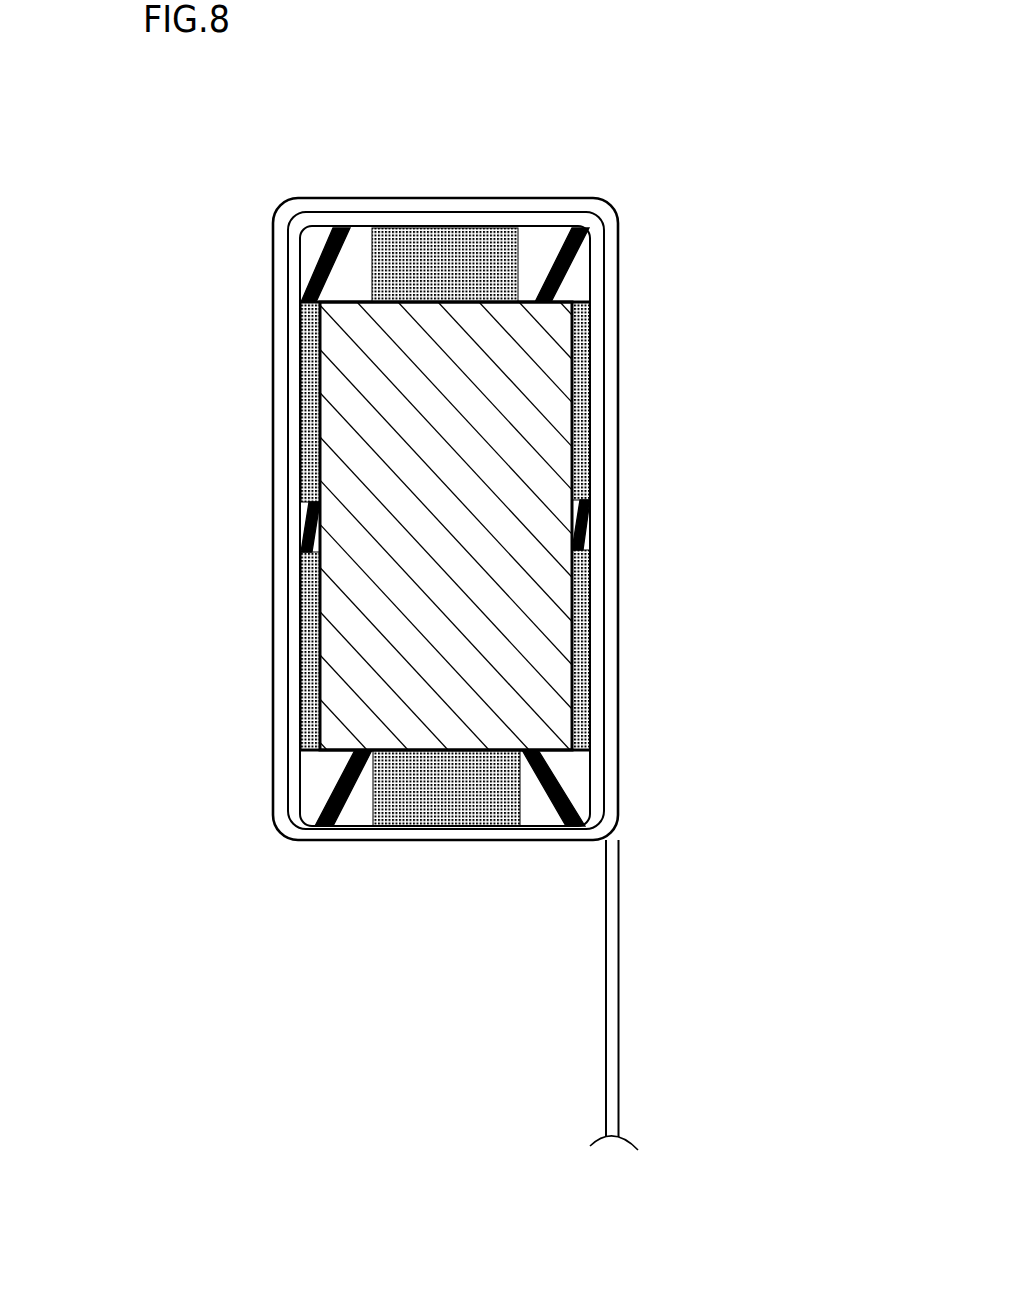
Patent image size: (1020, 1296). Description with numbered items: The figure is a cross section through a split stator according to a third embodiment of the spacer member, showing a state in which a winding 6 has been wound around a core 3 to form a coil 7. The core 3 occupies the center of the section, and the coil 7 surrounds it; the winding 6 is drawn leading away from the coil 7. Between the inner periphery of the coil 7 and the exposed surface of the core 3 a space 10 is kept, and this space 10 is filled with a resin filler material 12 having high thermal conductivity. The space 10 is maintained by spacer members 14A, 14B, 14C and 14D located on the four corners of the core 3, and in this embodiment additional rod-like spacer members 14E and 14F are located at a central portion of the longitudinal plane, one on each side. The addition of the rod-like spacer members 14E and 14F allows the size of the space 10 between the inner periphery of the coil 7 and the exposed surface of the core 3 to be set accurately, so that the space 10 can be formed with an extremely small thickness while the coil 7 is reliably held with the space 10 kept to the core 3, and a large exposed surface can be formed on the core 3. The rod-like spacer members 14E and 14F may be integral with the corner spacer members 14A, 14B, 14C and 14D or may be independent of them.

The core 3 is at (355, 350).
The winding 6 is at (620, 1017).
The coil 7 is at (619, 329).
The space 10 is at (412, 225).
The resin filler material 12 is at (442, 255).
The spacer member 14A is at (313, 250).
The spacer member 14B is at (545, 237).
The spacer member 14C is at (552, 797).
The spacer member 14D is at (315, 783).
The rod-like spacer member 14E is at (300, 518).
The rod-like spacer member 14F is at (590, 538).